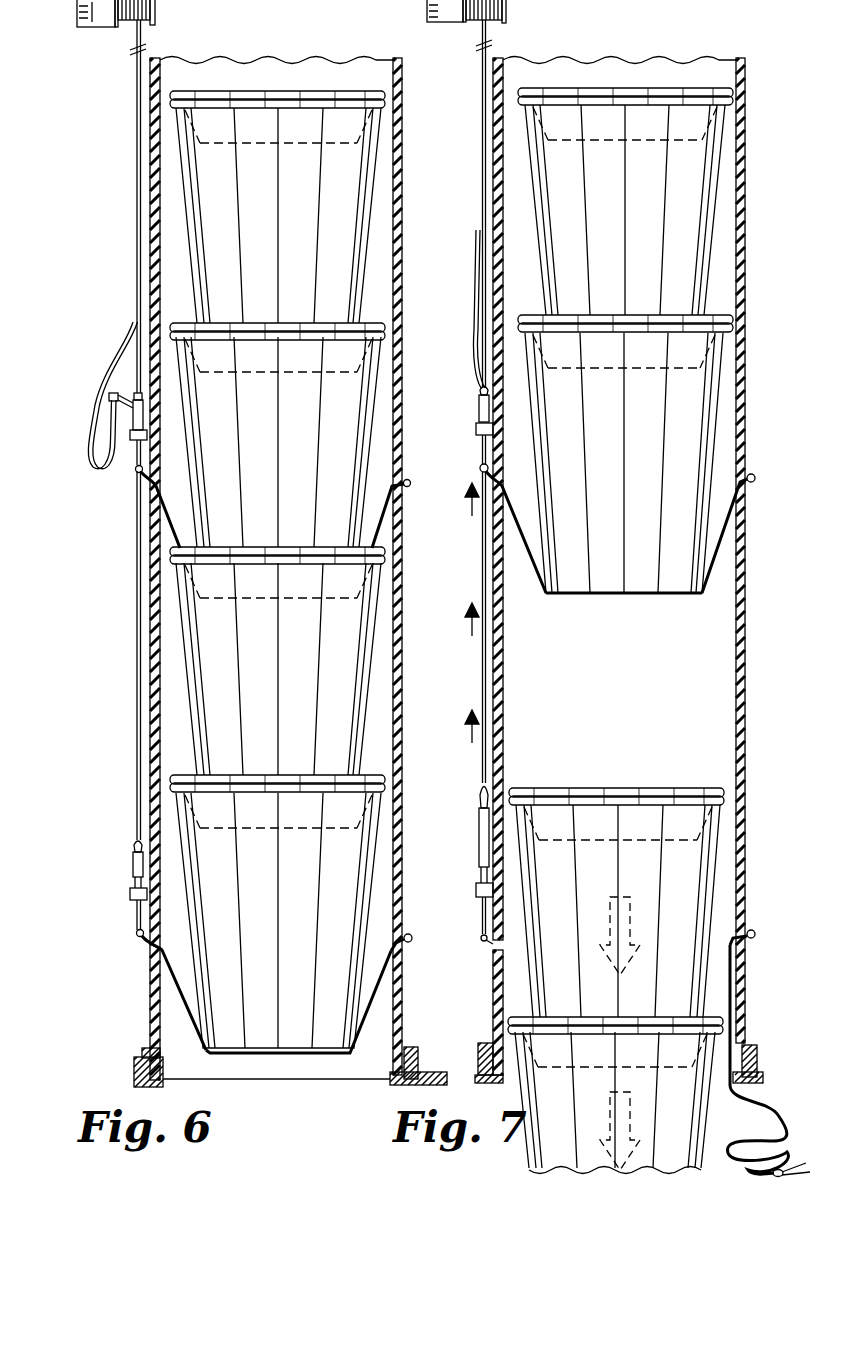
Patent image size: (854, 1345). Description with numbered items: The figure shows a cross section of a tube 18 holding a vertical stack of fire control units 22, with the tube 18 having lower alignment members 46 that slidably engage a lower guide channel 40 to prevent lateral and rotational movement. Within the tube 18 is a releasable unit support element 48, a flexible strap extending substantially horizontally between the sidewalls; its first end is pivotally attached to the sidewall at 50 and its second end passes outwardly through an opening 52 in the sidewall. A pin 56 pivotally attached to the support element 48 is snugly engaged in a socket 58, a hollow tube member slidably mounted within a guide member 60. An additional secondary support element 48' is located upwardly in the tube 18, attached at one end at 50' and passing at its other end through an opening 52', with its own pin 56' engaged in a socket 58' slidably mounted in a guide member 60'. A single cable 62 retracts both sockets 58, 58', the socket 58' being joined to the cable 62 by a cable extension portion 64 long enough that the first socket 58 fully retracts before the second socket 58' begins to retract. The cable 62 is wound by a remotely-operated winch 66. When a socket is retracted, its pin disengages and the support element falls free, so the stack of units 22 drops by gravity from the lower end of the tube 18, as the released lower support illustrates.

In FIG. 6, the tube 18 is at (398, 190).
In FIG. 7, the tube 18 is at (746, 251).
In FIG. 6, the fire control unit 22 is at (290, 208).
In FIG. 7, the fire control unit 22 is at (638, 210).
In FIG. 6, the lower guide channel 40 is at (134, 1071).
In FIG. 7, the lower guide channel 40 is at (480, 1075).
In FIG. 6, the lower alignment member 46 is at (142, 1050).
In FIG. 7, the lower alignment member 46 is at (490, 1043).
In FIG. 6, the releasable unit support element 48 is at (298, 1040).
In FIG. 7, the releasable unit support element 48 is at (765, 1059).
In FIG. 7, the secondary support element 48' is at (628, 619).
In FIG. 6, the pivotal attachment point 50 is at (405, 716).
In FIG. 7, the attachment point of secondary support element 50' is at (754, 683).
In FIG. 6, the opening 52 is at (137, 761).
In FIG. 7, the opening 52 is at (467, 929).
In FIG. 7, the opening for secondary support element 52' is at (561, 489).
In FIG. 6, the pin 56 is at (98, 712).
In FIG. 7, the pin 56 is at (792, 1136).
In FIG. 7, the pin of secondary support element 56' is at (461, 477).
In FIG. 6, the socket 58 is at (109, 640).
In FIG. 7, the socket 58 is at (462, 835).
In FIG. 7, the second socket 58' is at (462, 406).
In FIG. 6, the guide member 60 is at (100, 676).
In FIG. 7, the guide member 60 is at (464, 884).
In FIG. 7, the second guide member 60' is at (459, 440).
In FIG. 6, the cable 62 is at (135, 248).
In FIG. 7, the cable 62 is at (482, 214).
In FIG. 6, the cable extension portion 64 is at (95, 468).
In FIG. 7, the cable extension portion 64 is at (476, 332).
In FIG. 6, the remotely-operated winch 66 is at (100, 24).